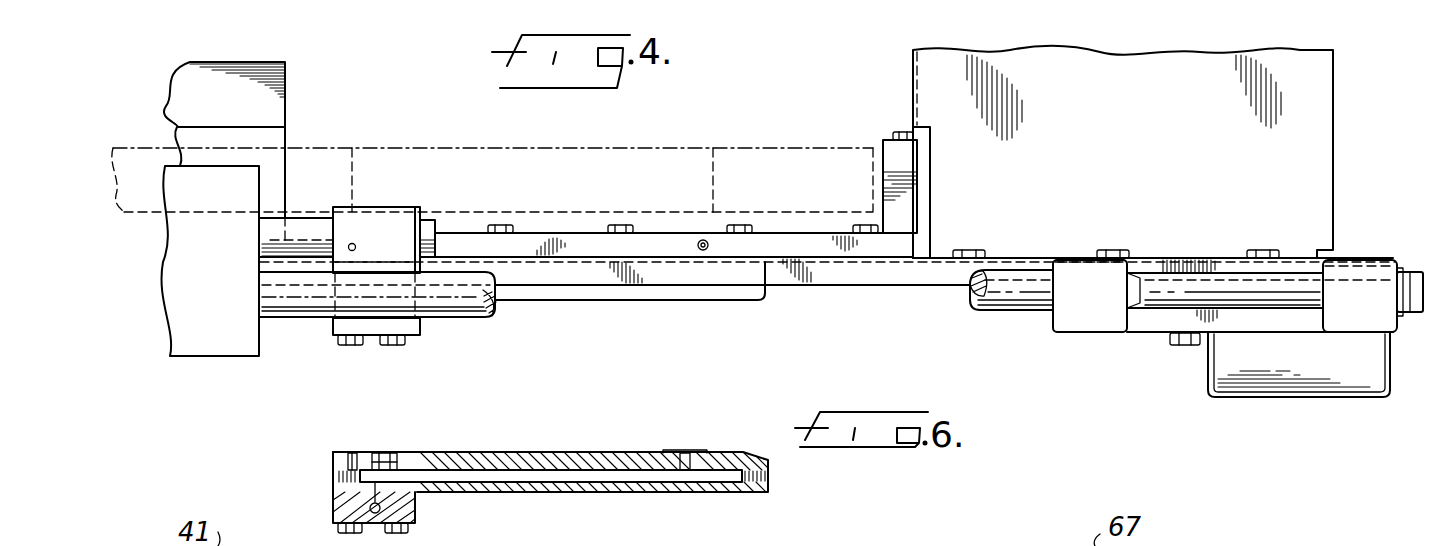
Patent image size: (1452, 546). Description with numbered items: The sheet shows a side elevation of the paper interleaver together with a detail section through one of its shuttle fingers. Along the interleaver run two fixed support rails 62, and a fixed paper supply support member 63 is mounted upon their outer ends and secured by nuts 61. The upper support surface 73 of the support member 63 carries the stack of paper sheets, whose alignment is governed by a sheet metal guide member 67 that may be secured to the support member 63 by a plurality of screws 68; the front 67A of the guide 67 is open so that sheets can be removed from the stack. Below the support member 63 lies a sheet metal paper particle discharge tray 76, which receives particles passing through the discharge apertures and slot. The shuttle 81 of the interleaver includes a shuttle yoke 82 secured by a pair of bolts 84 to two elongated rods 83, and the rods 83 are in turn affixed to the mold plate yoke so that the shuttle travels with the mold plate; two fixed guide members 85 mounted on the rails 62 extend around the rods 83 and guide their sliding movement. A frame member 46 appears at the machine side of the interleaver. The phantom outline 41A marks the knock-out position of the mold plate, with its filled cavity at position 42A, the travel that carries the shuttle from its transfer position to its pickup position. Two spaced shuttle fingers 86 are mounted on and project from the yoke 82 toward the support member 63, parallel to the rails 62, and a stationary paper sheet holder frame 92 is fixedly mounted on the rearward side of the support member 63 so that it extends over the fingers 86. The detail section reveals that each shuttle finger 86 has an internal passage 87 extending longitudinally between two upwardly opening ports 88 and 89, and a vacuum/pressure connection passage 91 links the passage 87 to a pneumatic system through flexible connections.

In FIG. 4, the frame member 46 is at (281, 100).
In FIG. 4, the fixed guide member 85 is at (213, 352).
In FIG. 4, the knock-out position of mold plate 41A is at (804, 146).
In FIG. 4, the knock-out position of mold cavity 42A is at (713, 150).
In FIG. 4, the elongated rod 83 is at (305, 224).
In FIG. 4, the shuttle yoke 82 is at (372, 216).
In FIG. 4, the bolt 84 is at (430, 222).
In FIG. 4, the paper sheet holder frame 92 is at (680, 200).
In FIG. 4, the shuttle finger 86 is at (662, 300).
In FIG. 6, the shuttle finger 86 is at (600, 421).
In FIG. 4, the fixed support rail 62 is at (478, 318).
In FIG. 4, the upper support surface 73 is at (925, 258).
In FIG. 4, the front of guide 67A is at (912, 127).
In FIG. 4, the sheet metal guide member 67 is at (1336, 128).
In FIG. 4, the screw 68 is at (985, 255).
In FIG. 4, the paper supply support member 63 is at (1162, 325).
In FIG. 4, the nut 61 is at (1423, 262).
In FIG. 4, the paper particle discharge tray 76 is at (1322, 398).
In FIG. 6, the internal passage 87 is at (537, 477).
In FIG. 6, the shuttle 81 is at (333, 506).
In FIG. 6, the port 89 is at (352, 452).
In FIG. 6, the port 88 is at (686, 452).
In FIG. 6, the vacuum/pressure connection passage 91 is at (380, 500).